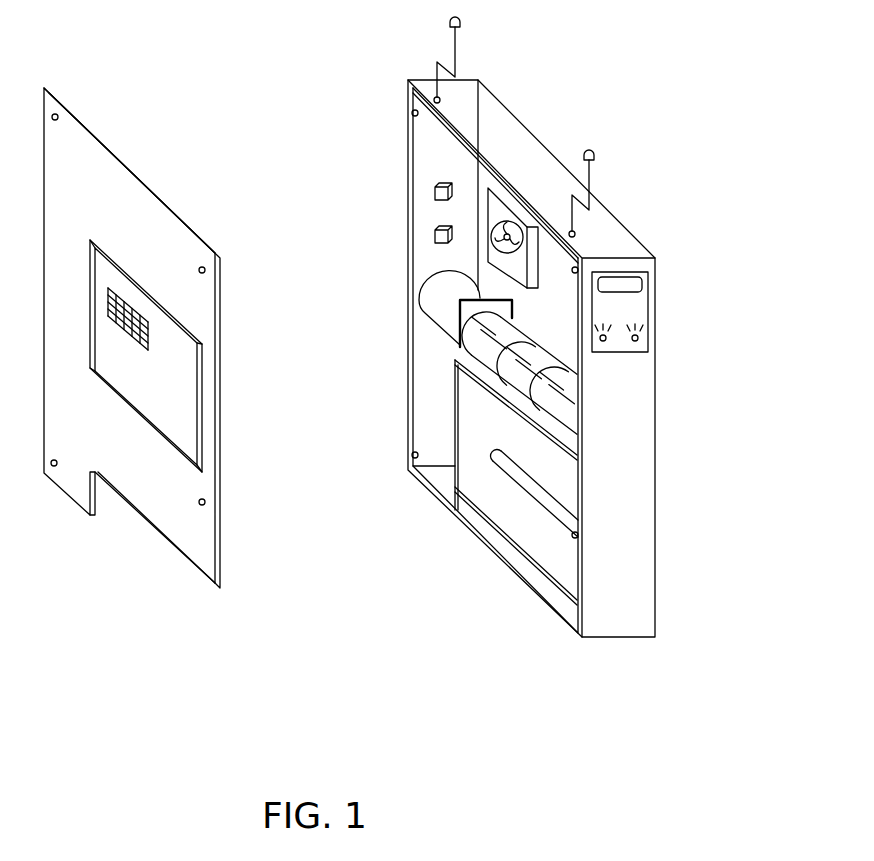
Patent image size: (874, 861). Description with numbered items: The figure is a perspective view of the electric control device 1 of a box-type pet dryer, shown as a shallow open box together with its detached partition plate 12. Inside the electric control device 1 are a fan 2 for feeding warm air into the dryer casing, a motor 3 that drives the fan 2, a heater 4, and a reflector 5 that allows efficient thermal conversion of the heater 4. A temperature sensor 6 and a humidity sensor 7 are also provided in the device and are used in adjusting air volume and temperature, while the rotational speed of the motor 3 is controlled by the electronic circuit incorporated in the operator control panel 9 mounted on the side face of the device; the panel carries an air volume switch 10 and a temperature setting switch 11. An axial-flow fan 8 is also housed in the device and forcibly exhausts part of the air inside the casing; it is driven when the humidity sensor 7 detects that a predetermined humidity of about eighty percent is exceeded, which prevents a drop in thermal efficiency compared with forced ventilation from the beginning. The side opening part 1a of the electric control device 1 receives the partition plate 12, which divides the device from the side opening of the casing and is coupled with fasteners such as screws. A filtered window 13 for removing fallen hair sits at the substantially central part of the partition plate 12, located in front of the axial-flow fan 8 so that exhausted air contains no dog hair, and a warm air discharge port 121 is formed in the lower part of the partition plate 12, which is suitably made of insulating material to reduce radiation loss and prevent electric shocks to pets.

The electric control device 1 is at (628, 607).
The side opening part 1a is at (392, 522).
The fan 2 is at (485, 363).
The motor 3 is at (448, 300).
The heater 4 is at (520, 493).
The reflector 5 is at (557, 547).
The temperature sensor 6 is at (435, 234).
The humidity sensor 7 is at (435, 188).
The axial-flow fan 8 is at (517, 207).
The operator control panel 9 is at (655, 272).
The air volume switch 10 is at (606, 336).
The temperature setting switch 11 is at (638, 337).
The partition plate 12 is at (135, 167).
The filtered window 13 is at (180, 372).
The warm air discharge port 121 is at (195, 572).